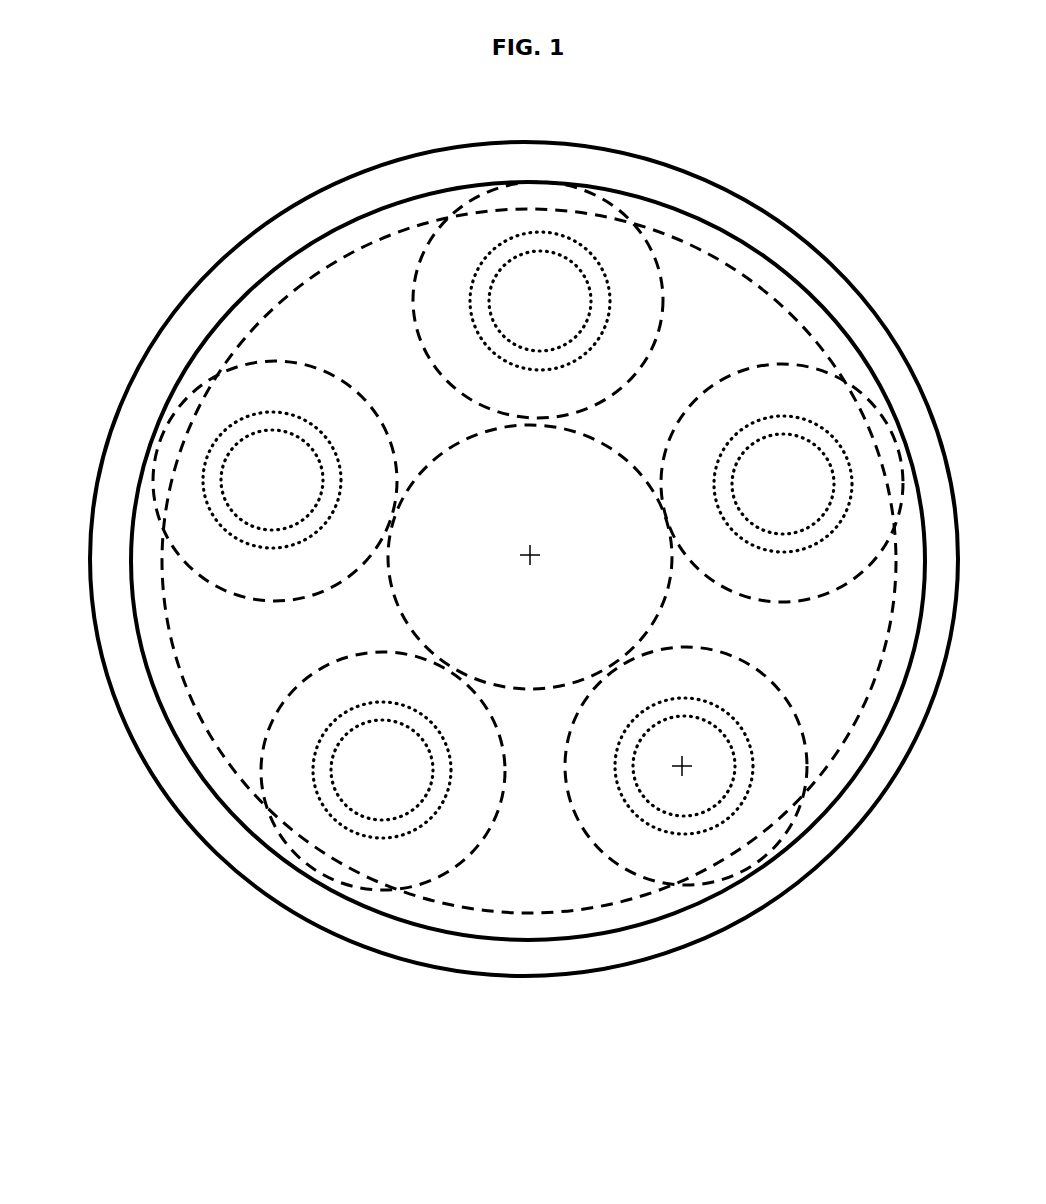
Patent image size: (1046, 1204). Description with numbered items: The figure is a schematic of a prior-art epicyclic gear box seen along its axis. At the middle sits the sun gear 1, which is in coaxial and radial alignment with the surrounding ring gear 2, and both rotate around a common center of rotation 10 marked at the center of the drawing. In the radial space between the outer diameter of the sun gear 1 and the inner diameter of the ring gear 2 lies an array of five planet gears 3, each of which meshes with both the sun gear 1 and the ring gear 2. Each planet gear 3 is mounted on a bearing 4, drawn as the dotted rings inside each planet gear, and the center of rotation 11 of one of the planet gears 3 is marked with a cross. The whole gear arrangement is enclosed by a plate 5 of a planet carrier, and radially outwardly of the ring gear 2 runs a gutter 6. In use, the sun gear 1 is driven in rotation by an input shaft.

The sun gear 1 is at (553, 505).
The ring gear 2 is at (647, 902).
The planet gears 3 is at (247, 573).
The bearing 4 is at (793, 428).
The plate 5 is at (523, 873).
The gutter 6 is at (340, 923).
The center of rotation 10 is at (530, 555).
The center of rotation 11 is at (695, 777).